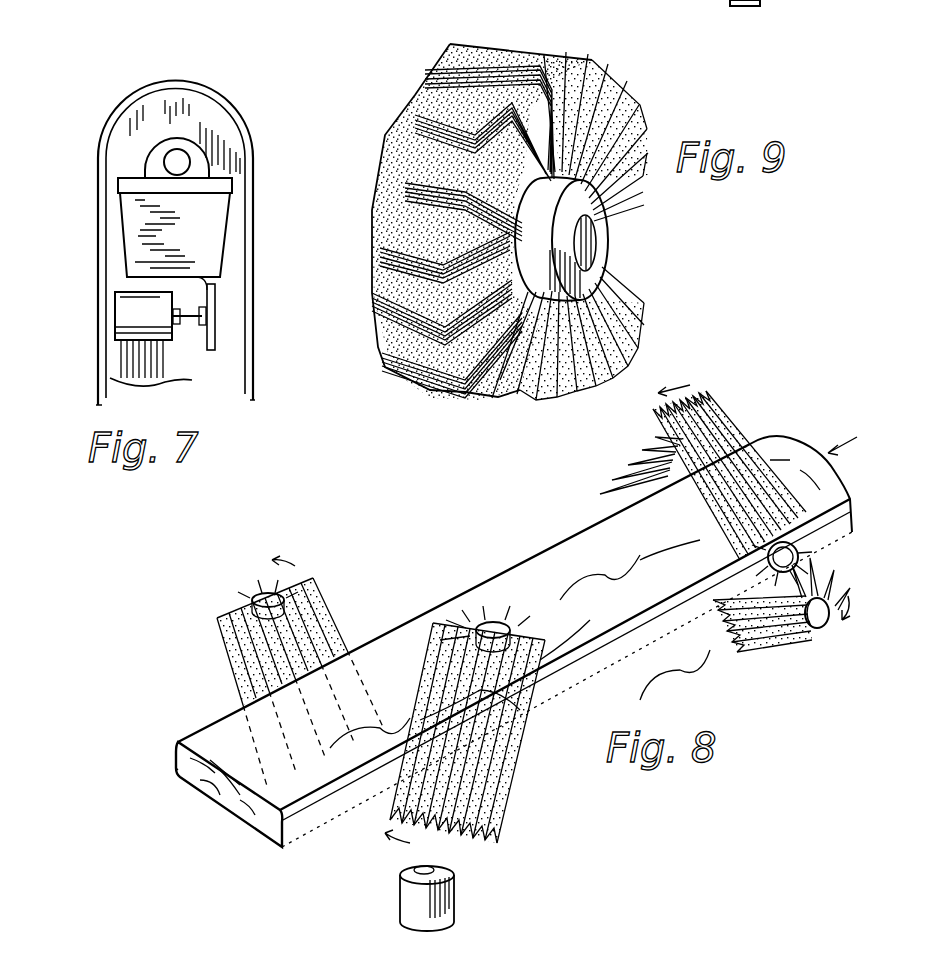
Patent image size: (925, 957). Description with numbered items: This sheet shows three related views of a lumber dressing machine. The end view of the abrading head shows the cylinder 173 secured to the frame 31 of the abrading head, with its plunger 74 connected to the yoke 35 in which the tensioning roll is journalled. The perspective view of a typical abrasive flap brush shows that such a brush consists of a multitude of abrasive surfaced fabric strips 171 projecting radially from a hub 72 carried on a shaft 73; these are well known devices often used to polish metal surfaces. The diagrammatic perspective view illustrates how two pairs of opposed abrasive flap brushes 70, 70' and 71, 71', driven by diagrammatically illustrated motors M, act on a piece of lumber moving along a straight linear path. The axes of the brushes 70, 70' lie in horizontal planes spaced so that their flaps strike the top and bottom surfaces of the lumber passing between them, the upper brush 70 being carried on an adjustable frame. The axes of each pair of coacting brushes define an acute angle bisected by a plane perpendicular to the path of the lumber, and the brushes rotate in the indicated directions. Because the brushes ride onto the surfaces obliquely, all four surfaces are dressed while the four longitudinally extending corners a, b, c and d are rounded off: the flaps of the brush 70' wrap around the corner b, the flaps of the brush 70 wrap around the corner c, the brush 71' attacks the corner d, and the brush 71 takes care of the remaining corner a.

In FIG. 7, the cylinder 173 is at (115, 313).
In FIG. 7, the plunger 74 is at (188, 322).
In FIG. 7, the yoke 35 is at (212, 335).
In FIG. 7, the frame 31 is at (170, 384).
In FIG. 9, the abrasive surfaced fabric strips 171 is at (612, 92).
In FIG. 9, the hub 72 is at (596, 198).
In FIG. 9, the shaft 73 is at (590, 234).
In FIG. 8, the upper brush 70 is at (728, 482).
In FIG. 8, the abrasive flap brush 70' is at (781, 626).
In FIG. 8, the abrasive flap brush 71 is at (471, 724).
In FIG. 8, the abrasive flap brush 71' is at (269, 671).
In FIG. 8, the corner a is at (286, 808).
In FIG. 8, the corner b is at (282, 847).
In FIG. 8, the corner c is at (178, 742).
In FIG. 8, the corner d is at (176, 770).
In FIG. 8, the motor M is at (457, 900).